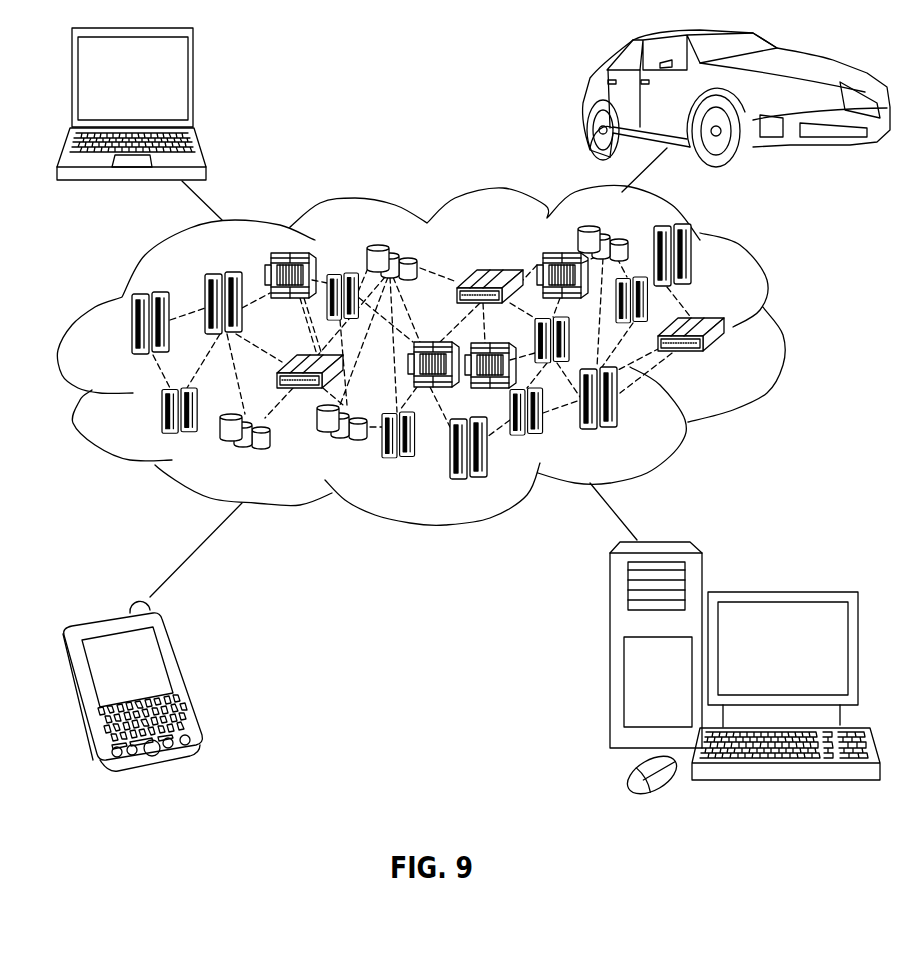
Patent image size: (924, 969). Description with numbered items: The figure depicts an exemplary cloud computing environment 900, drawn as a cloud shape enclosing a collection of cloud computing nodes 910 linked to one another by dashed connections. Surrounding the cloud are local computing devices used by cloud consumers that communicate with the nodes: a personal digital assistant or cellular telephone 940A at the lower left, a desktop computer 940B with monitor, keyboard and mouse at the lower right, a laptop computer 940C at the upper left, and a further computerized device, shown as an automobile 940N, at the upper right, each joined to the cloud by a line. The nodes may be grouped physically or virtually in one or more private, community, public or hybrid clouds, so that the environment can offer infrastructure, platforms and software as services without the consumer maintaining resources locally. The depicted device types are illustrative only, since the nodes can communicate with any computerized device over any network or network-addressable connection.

The network cloud 900 is at (783, 332).
The network nodes / servers 910 is at (727, 360).
The personal digital assistant (PDA) or cellular telephone 940A is at (185, 675).
The desktop computer 940B is at (782, 592).
The laptop computer 940C is at (195, 85).
The vehicle 940N is at (583, 98).